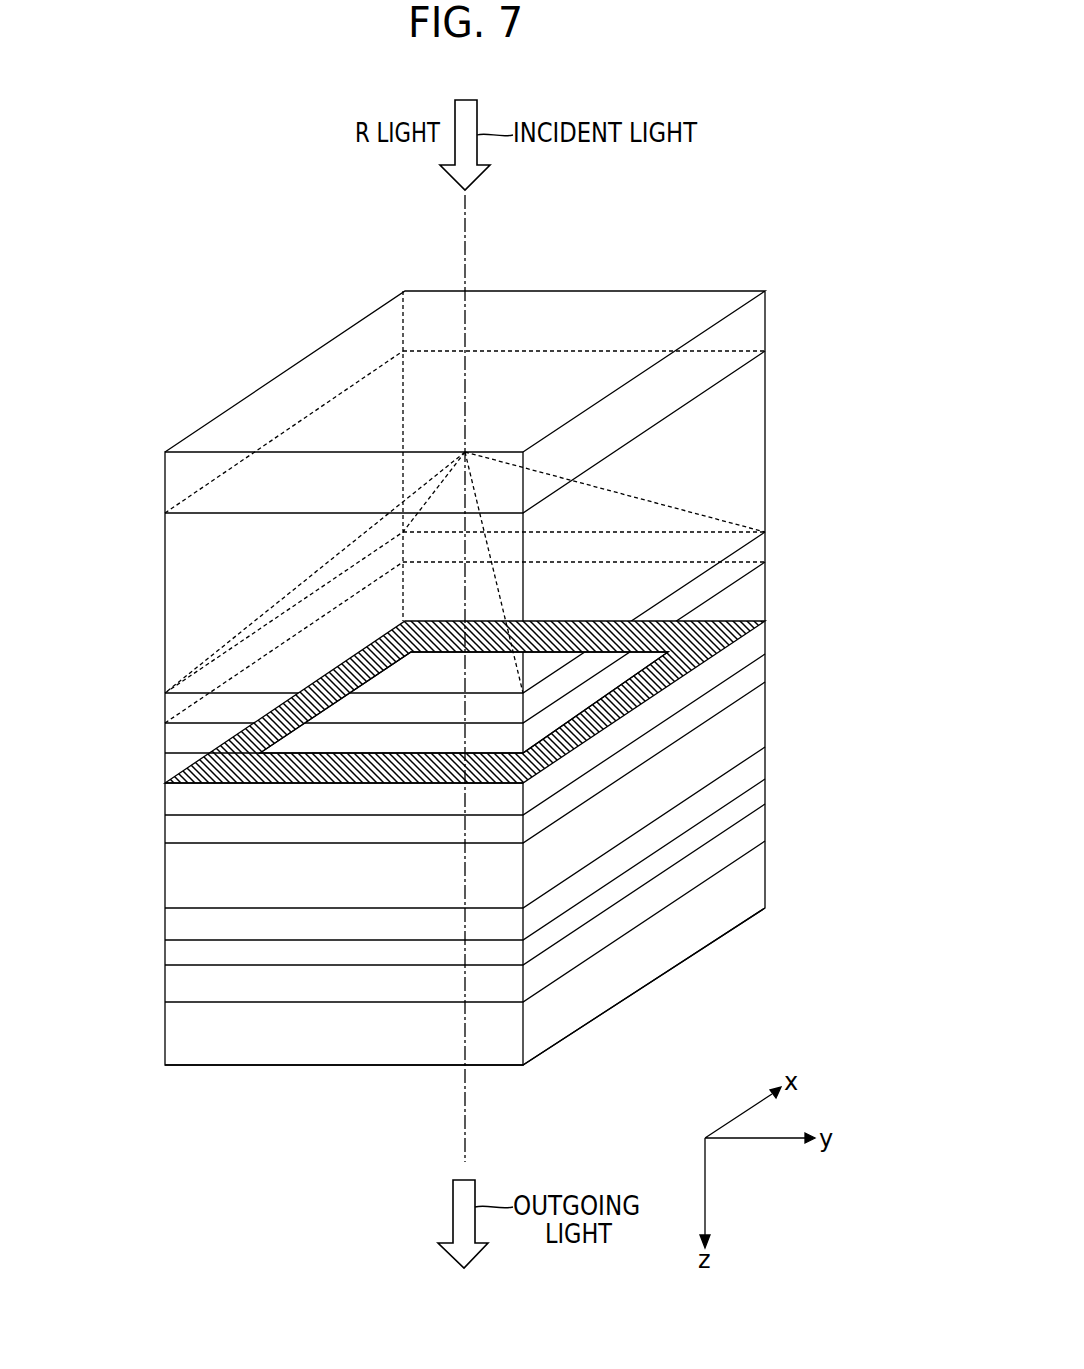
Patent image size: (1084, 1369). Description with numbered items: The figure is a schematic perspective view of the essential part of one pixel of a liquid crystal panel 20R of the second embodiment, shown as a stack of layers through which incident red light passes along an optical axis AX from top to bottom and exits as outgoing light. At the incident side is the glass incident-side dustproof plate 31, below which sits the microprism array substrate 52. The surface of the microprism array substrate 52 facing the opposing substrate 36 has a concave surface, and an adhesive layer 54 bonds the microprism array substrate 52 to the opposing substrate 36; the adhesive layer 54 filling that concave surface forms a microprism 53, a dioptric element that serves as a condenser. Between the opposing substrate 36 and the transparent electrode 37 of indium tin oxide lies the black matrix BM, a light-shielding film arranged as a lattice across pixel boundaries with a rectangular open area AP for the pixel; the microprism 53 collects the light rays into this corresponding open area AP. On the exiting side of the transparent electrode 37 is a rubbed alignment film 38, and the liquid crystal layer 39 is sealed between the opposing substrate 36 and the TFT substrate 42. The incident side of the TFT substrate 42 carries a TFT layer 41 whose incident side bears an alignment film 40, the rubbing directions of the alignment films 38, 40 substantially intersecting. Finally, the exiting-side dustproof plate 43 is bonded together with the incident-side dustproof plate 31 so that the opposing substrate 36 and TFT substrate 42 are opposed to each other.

The red light modulation unit / liquid crystal light valve 20R is at (739, 248).
The incident-side dustproof plate 31 is at (165, 488).
The microprism array substrate 52 is at (165, 579).
The microprism 53 is at (230, 630).
The adhesive layer 54 is at (165, 711).
The black matrix BM is at (205, 760).
The open area AP is at (572, 632).
The opposing substrate 36 is at (165, 769).
The transparent electrode 37 is at (165, 801).
The alignment film 38 is at (165, 829).
The liquid crystal layer 39 is at (165, 876).
The alignment film 40 is at (165, 923).
The TFT layer 41 is at (165, 953).
The TFT substrate 42 is at (165, 983).
The exiting-side dustproof plate 43 is at (165, 1035).
The optical axis AX is at (465, 1118).